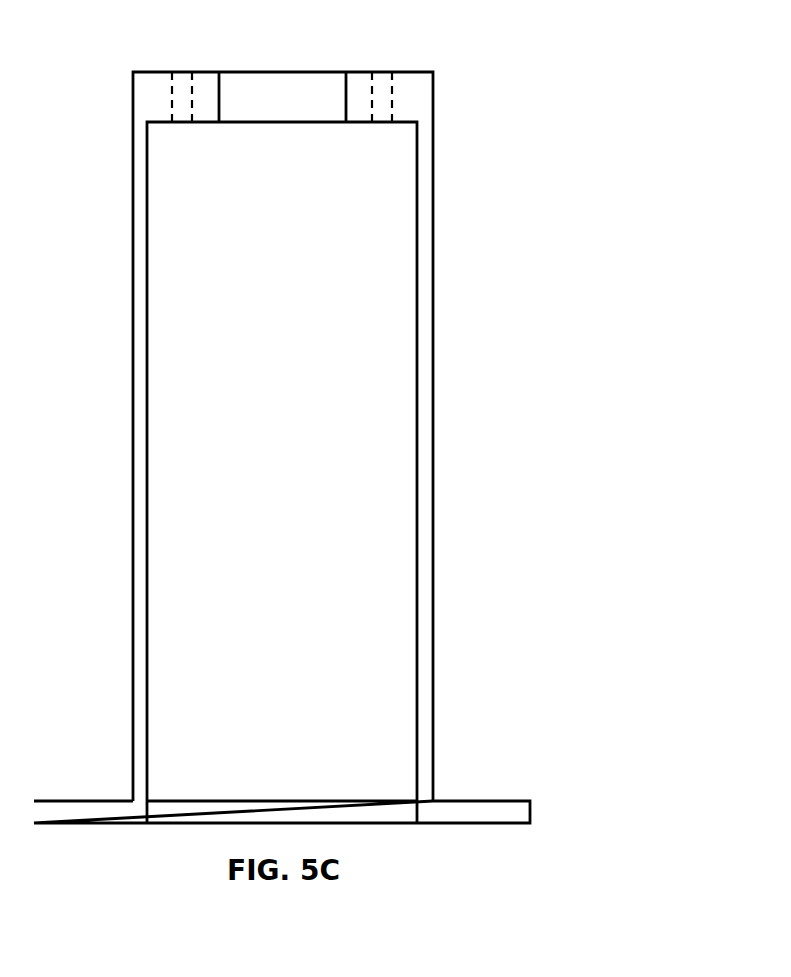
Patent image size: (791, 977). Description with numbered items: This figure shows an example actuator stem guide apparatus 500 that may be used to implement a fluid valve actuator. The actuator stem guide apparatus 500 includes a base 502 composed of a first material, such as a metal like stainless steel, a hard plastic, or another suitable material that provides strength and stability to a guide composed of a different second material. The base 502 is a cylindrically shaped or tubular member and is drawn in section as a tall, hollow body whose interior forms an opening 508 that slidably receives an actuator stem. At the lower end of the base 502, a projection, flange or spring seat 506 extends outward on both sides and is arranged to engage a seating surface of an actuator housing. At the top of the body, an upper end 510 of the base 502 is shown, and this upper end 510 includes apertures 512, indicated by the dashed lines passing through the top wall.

The actuator stem guide apparatus 500 is at (505, 44).
The base 502 is at (433, 492).
The spring seat 506 is at (531, 810).
The opening 508 is at (417, 307).
The upper end 510 is at (418, 70).
The apertures 512 is at (182, 80).